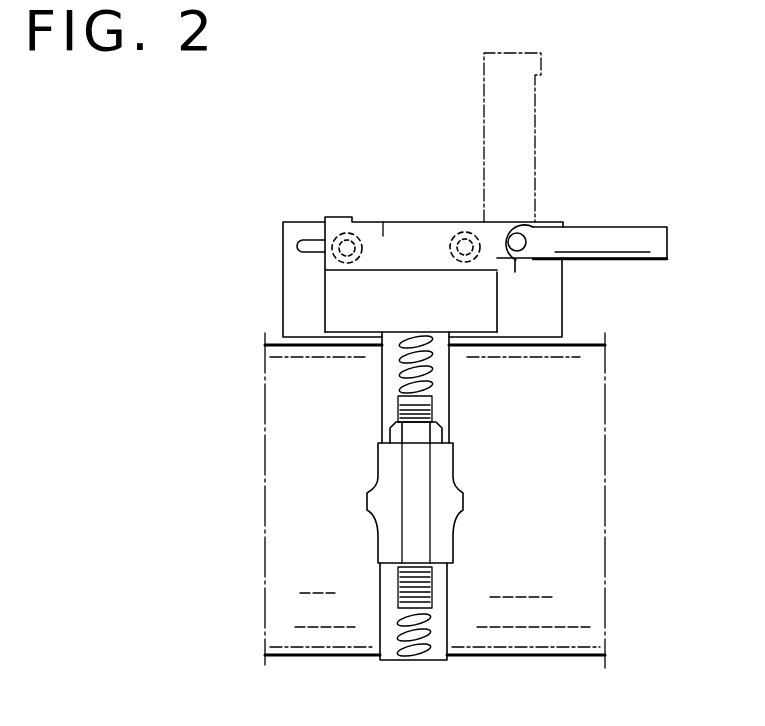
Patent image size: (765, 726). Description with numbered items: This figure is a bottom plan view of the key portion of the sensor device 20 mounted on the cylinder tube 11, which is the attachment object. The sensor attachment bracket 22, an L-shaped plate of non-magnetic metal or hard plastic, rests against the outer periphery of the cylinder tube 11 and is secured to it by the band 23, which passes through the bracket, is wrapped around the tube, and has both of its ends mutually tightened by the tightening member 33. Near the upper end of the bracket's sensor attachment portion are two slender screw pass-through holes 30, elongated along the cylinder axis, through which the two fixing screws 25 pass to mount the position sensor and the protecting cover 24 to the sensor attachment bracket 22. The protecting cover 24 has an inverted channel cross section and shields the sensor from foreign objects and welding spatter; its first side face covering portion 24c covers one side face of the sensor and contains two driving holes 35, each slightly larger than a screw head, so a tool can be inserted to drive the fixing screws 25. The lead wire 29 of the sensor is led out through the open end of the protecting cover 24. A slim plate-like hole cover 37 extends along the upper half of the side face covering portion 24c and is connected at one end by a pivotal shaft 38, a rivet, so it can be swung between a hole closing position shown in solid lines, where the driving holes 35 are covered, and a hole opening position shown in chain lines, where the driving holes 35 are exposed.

The cylinder tube 11 is at (562, 516).
The sensor device 20 is at (603, 207).
The sensor attachment bracket 22 is at (553, 305).
The band 23 is at (408, 660).
The protecting cover 24 is at (322, 280).
The first side face covering portion 24c is at (340, 304).
The fixing screws 25 is at (335, 236).
The lead wire 29 is at (655, 262).
The screw pass-through holes 30 is at (300, 246).
The tightening member 33 is at (375, 500).
The driving holes 35 is at (345, 238).
The hole cover 37 is at (385, 222).
The pivotal shaft 38 is at (522, 238).